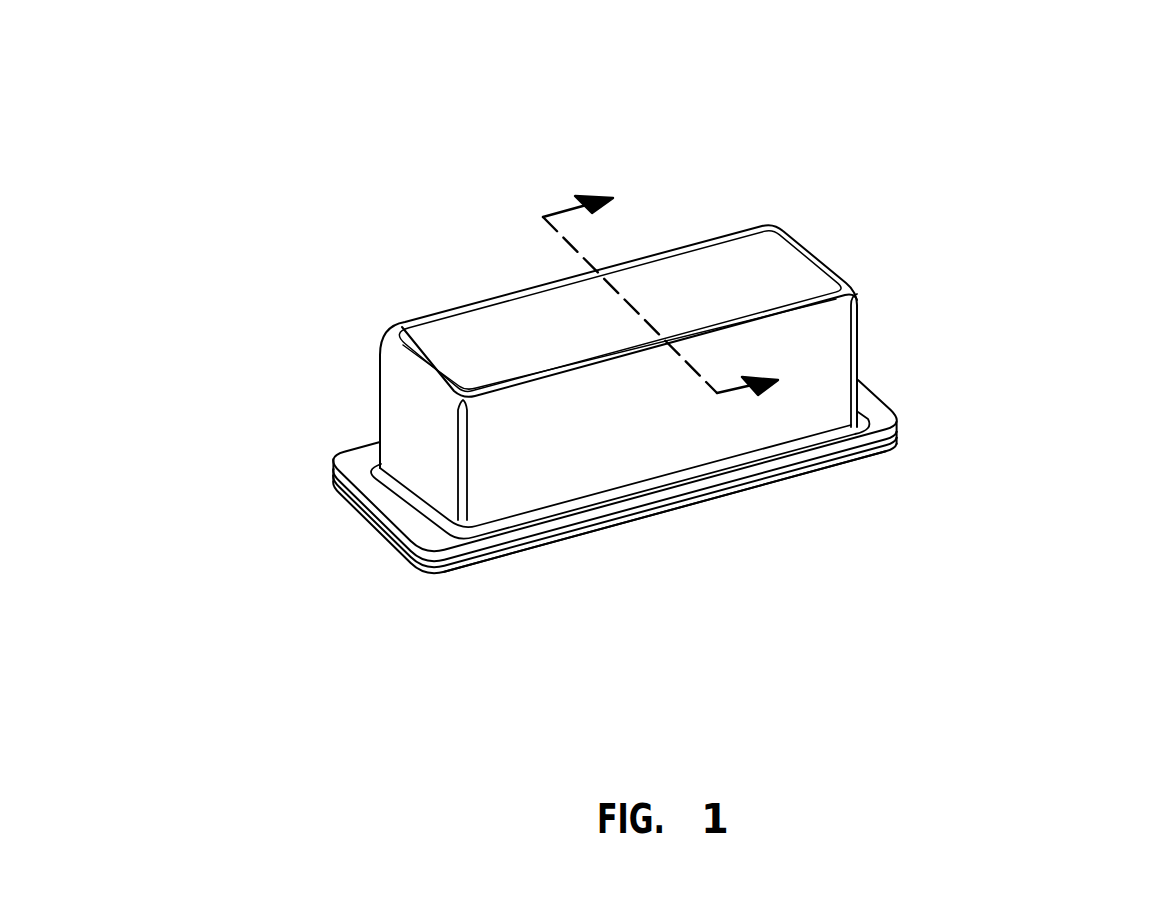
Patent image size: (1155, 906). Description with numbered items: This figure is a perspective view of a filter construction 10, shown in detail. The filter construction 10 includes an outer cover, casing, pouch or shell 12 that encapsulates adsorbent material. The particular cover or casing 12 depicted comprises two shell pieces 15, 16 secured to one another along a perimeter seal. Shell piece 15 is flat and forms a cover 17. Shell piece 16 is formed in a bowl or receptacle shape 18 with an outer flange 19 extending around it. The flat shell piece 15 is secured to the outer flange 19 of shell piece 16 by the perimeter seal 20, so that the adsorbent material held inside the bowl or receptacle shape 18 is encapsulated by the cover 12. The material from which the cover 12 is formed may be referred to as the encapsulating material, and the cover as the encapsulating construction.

The filter construction 10 is at (883, 223).
The outer cover, casing, pouch or shell 12 is at (755, 257).
The shell piece 16 is at (830, 338).
The bowl or receptacle shape 18 is at (694, 263).
The outer flange 19 is at (354, 457).
The shell piece 15 is at (520, 557).
The cover 17 is at (437, 573).
The perimeter seal 20 is at (667, 510).